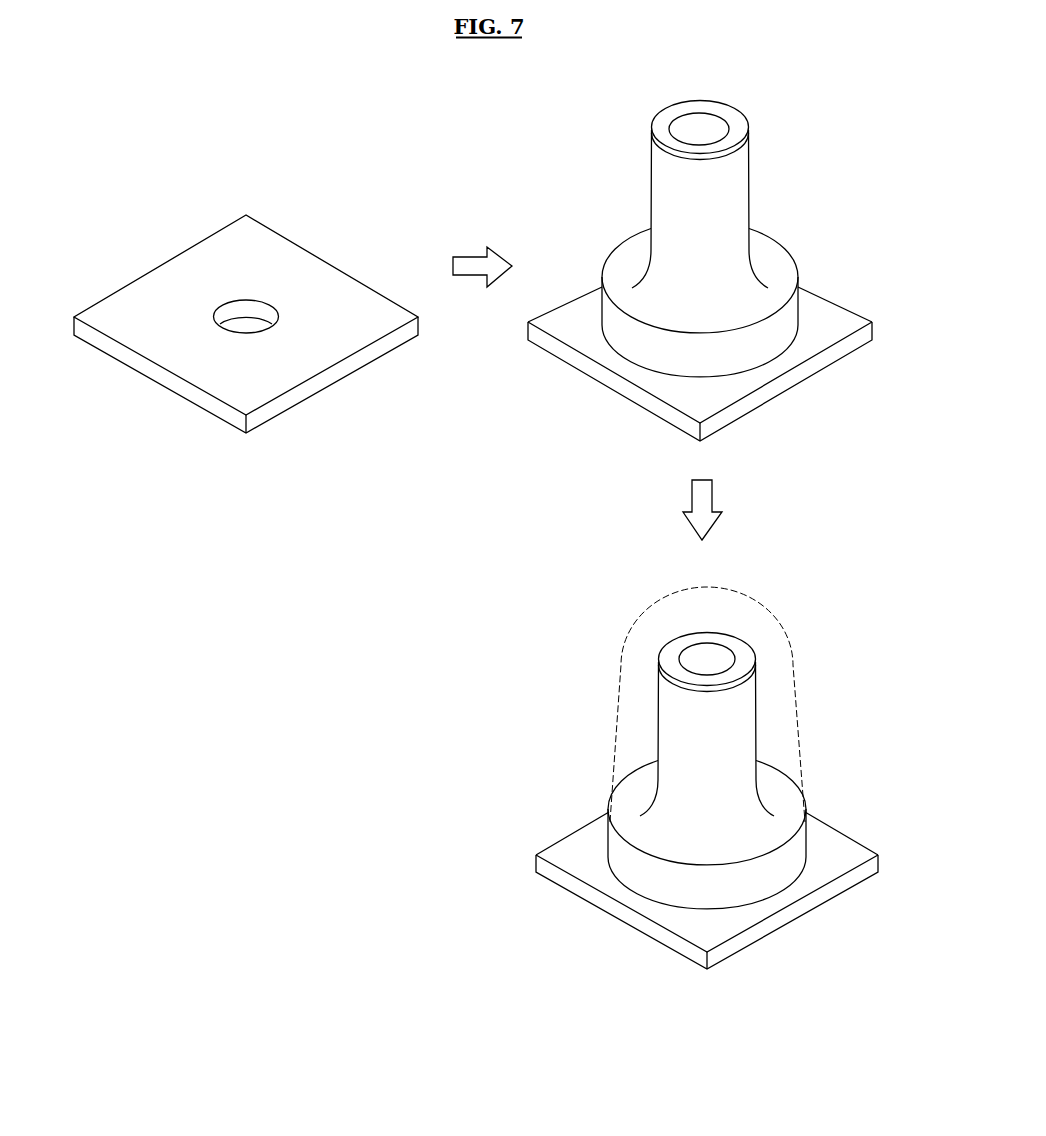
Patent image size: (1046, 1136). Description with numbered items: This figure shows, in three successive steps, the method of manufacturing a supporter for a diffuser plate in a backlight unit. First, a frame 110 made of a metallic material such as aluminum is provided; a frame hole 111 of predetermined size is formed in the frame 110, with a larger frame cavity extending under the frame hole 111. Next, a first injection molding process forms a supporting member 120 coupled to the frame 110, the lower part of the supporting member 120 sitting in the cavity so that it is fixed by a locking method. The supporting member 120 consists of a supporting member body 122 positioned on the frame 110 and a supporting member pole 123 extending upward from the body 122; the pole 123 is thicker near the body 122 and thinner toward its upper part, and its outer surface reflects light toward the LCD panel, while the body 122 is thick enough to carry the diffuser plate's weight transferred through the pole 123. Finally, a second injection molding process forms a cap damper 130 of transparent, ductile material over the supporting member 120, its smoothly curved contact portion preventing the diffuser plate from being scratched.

The frame 110 is at (328, 273).
The frame hole 111 is at (260, 307).
The supporting member 120 is at (753, 505).
The supporting member body 122 is at (778, 259).
The supporting member pole 123 is at (742, 178).
The cap damper 130 is at (758, 618).